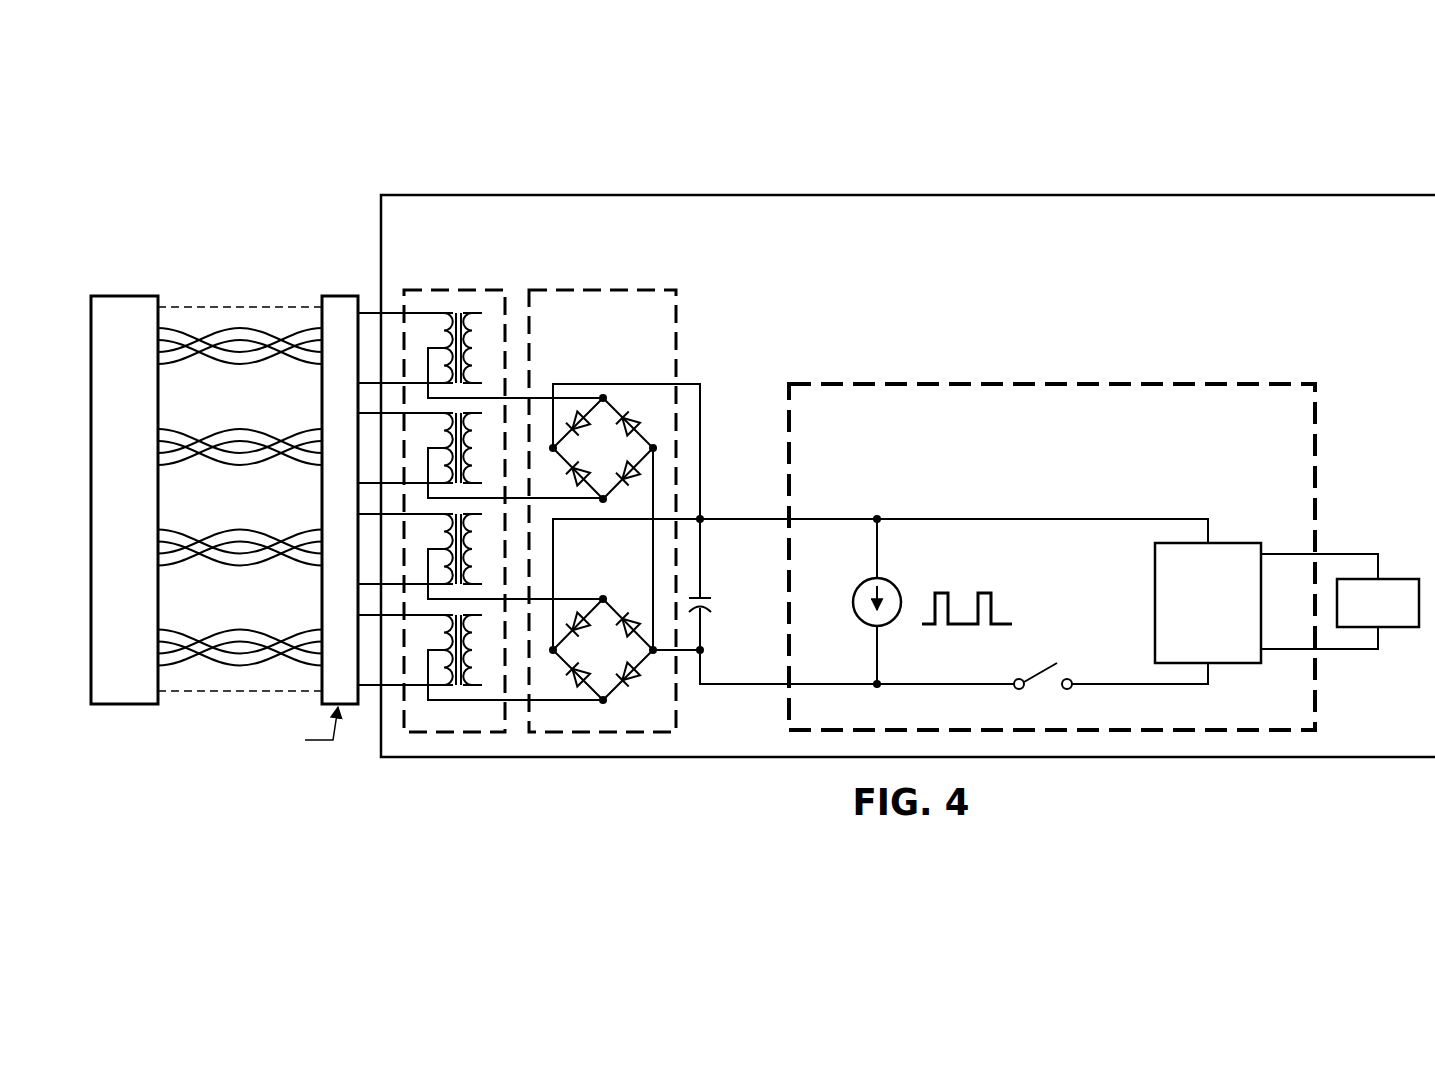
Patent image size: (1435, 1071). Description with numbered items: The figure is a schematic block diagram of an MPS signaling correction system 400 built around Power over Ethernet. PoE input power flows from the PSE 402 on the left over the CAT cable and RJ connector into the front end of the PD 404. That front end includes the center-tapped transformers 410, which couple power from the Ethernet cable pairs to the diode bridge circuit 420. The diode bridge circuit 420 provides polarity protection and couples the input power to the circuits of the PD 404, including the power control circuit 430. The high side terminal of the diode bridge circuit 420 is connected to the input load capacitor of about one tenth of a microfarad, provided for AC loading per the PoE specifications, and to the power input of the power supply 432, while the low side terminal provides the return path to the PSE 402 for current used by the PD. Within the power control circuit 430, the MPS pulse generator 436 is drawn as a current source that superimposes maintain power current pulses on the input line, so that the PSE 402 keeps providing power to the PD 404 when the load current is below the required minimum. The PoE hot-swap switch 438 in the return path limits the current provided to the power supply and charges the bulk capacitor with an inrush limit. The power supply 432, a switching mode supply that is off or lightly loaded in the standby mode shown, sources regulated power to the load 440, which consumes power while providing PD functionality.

The MPS signaling correction system 400 is at (412, 116).
The PSE 402 is at (123, 296).
The PD 404 is at (1217, 192).
The center-tapped transformers 410 is at (438, 286).
The diode bridge circuit 420 is at (585, 286).
The power control circuit 430 is at (1168, 380).
The power supply 432 is at (1243, 664).
The MPS pulse generator 436 is at (863, 620).
The PoE hot-swap switch 438 is at (1043, 692).
The load 440 is at (1390, 628).